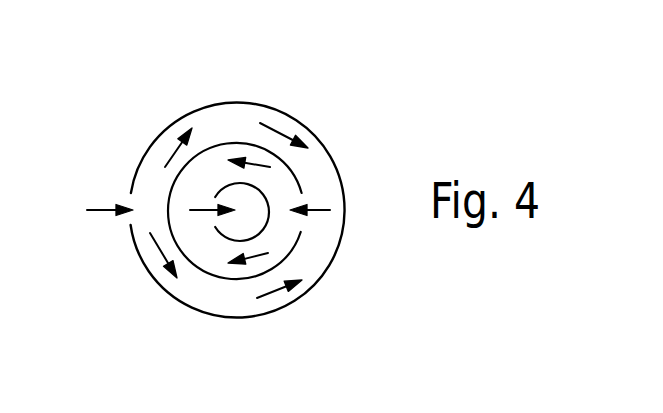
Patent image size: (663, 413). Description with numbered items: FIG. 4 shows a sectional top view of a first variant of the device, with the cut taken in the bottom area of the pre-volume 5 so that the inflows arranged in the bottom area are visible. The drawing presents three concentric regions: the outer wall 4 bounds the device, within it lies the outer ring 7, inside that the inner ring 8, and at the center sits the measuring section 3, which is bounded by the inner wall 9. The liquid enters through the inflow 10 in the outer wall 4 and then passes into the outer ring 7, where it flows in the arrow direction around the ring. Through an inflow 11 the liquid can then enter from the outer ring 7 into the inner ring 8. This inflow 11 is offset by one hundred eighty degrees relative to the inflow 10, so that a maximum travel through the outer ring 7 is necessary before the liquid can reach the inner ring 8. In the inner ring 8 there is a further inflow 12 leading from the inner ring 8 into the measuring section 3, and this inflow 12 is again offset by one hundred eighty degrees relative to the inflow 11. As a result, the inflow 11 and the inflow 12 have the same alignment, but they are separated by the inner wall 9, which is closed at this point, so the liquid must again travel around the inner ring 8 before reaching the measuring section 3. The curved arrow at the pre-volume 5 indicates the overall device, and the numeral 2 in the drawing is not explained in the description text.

The central tube 2 is at (266, 196).
The measuring section 3 is at (230, 225).
The outer wall 4 is at (295, 298).
The pre-volume 5 is at (130, 138).
The outer ring 7 is at (240, 122).
The inner ring 8 is at (217, 168).
The inner wall 9 is at (298, 240).
The inflow 10 is at (130, 226).
The inflow 11 is at (307, 197).
The inflow 12 is at (208, 218).